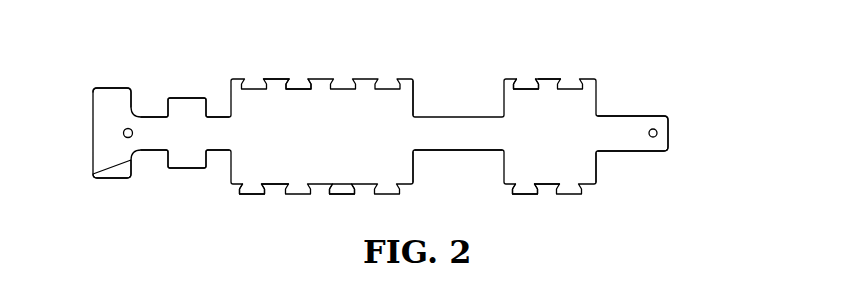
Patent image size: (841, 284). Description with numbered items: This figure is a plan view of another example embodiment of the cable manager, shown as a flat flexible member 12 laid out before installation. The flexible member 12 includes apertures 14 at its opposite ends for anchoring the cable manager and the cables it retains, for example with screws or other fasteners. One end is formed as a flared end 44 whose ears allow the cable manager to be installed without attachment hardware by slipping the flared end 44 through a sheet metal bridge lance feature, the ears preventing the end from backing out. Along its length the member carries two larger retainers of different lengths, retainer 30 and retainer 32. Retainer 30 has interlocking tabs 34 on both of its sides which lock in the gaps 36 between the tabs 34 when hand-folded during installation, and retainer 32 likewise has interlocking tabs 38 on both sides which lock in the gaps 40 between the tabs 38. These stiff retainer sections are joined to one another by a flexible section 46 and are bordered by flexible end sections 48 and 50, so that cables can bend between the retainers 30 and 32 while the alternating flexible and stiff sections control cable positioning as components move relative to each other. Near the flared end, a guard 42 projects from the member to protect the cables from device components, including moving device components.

The flexible member 12 is at (442, 127).
The aperture 14 is at (124, 128).
The retainer 30 is at (413, 168).
The retainer 32 is at (597, 167).
The interlocking tab 34 is at (277, 79).
The gap 36 is at (298, 89).
The interlocking tab 38 is at (547, 80).
The gap 40 is at (525, 88).
The guard 42 is at (186, 164).
The flared end 44 is at (111, 177).
The flexible section 46 is at (467, 140).
The flexible end section 48 is at (158, 122).
The flexible end section 50 is at (615, 123).